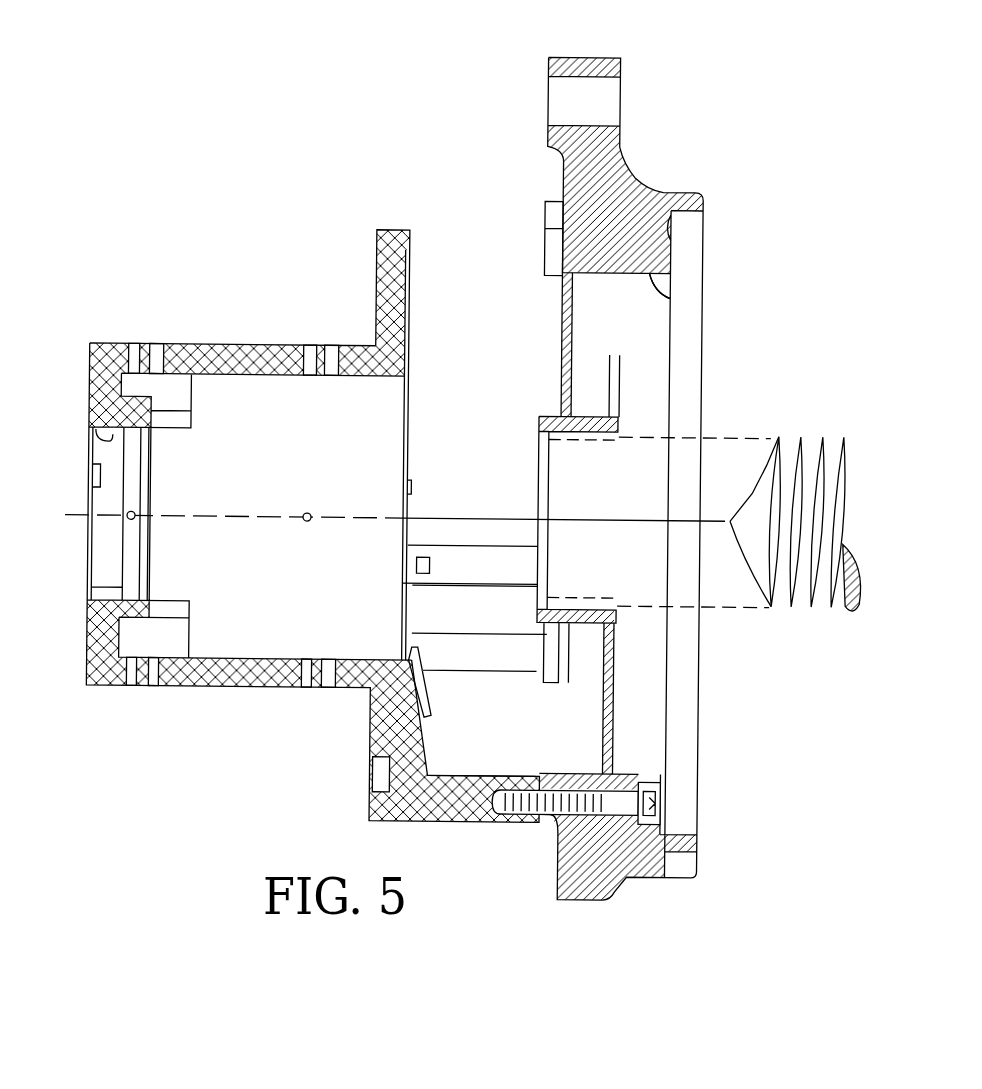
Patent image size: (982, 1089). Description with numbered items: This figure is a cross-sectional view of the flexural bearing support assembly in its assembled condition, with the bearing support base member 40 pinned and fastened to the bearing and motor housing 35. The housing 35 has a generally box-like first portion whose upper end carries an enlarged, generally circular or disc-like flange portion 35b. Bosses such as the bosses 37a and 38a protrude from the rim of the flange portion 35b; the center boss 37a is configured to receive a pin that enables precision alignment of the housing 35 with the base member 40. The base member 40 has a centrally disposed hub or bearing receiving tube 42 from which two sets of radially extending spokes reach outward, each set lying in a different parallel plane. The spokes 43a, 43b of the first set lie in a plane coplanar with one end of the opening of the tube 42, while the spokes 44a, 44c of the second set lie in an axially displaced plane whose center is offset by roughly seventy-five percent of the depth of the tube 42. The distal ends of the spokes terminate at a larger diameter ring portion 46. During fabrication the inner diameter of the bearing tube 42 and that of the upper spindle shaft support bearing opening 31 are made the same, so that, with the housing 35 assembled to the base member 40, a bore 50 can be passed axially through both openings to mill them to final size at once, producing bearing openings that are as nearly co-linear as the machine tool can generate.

The upper spindle shaft support bearing opening 31 is at (103, 450).
The bearing and motor housing 35 is at (229, 330).
The flange portion 35b is at (405, 250).
The boss 37a is at (433, 630).
The boss 38a is at (437, 533).
The bearing support base member 40 is at (652, 176).
The bearing receiving tube 42 is at (540, 414).
The spoke 43a is at (471, 707).
The spoke 43b is at (560, 312).
The spoke 44a is at (618, 371).
The spoke 44c is at (615, 703).
The ring portion 46 is at (668, 296).
The bore 50 is at (814, 428).